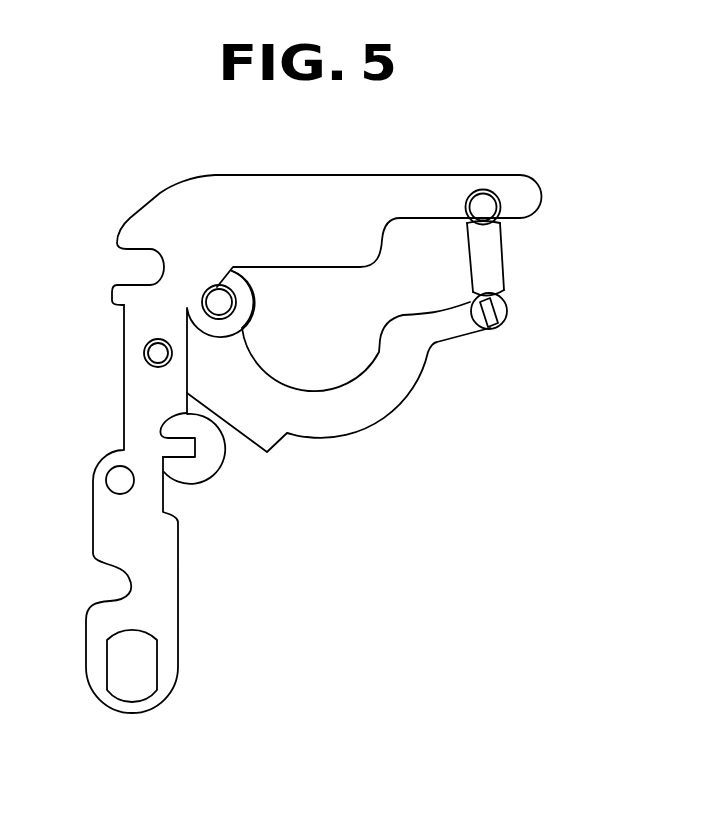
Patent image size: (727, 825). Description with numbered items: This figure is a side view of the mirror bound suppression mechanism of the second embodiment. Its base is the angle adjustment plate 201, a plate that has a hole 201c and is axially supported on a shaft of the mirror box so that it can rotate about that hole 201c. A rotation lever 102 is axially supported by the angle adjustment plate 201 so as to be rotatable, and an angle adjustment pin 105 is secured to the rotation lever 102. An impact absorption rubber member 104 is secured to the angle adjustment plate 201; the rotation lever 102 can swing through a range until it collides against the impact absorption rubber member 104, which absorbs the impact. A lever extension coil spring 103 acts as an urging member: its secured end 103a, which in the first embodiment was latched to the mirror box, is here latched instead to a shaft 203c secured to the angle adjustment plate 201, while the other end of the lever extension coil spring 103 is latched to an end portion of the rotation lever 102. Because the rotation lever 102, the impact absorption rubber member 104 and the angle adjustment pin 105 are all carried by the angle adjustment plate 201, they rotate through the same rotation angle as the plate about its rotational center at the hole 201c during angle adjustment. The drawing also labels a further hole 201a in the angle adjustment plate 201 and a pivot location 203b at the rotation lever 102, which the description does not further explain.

The rotation lever 102 is at (282, 412).
The lever extension coil spring 103 is at (495, 262).
The secured end 103a is at (503, 200).
The impact absorption rubber member 104 is at (207, 460).
The angle adjustment pin 105 is at (217, 300).
The angle adjustment plate 201 is at (152, 600).
The hole 201a is at (155, 352).
The hole 201c is at (123, 483).
The pin 203b is at (220, 299).
The shaft 203c is at (483, 206).